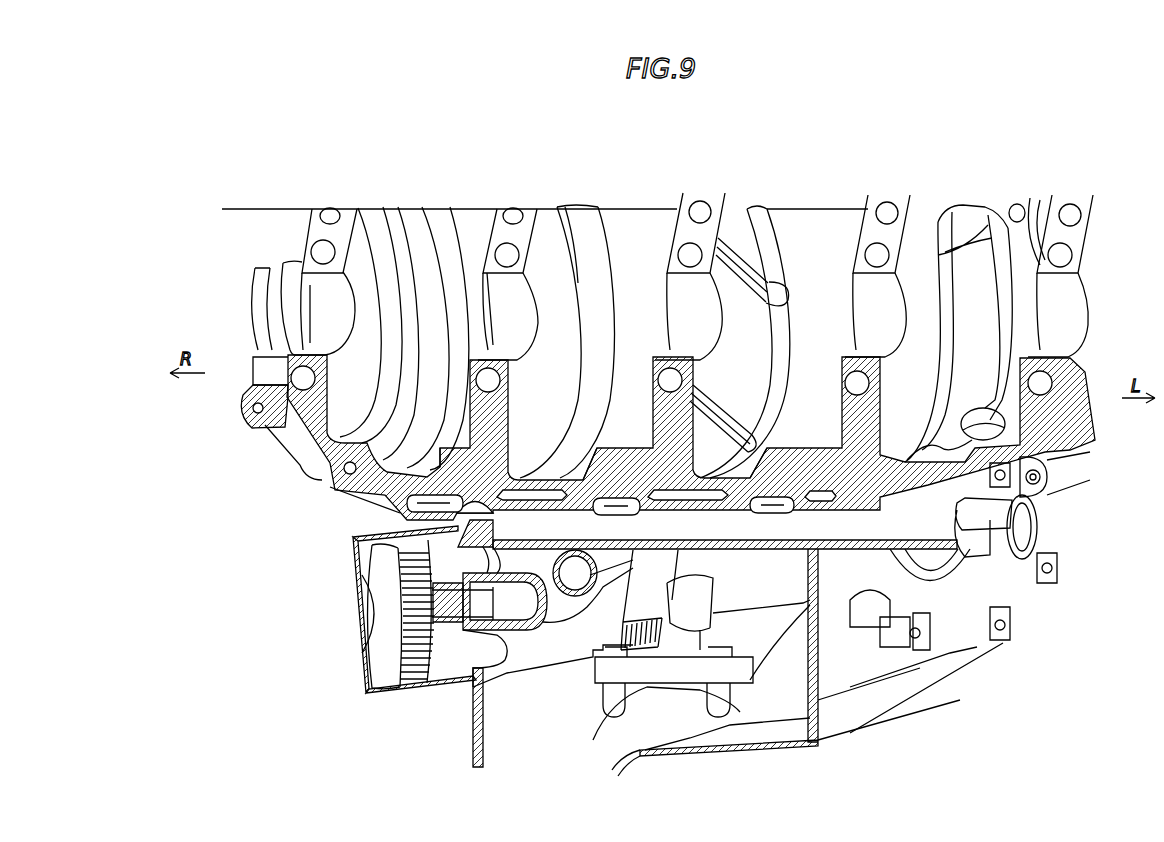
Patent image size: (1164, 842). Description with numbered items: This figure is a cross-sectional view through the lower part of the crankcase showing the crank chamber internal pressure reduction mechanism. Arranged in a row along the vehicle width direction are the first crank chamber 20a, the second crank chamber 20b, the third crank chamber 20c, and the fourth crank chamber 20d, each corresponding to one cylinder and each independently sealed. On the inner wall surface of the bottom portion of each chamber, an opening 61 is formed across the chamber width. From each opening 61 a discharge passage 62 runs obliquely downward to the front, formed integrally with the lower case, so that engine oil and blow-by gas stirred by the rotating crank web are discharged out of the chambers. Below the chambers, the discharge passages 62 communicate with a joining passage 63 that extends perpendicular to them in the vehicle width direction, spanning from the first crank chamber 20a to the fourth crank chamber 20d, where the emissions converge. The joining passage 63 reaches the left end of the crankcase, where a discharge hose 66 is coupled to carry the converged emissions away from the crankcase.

The first crank chamber 20a is at (975, 308).
The second crank chamber 20b is at (830, 308).
The third crank chamber 20c is at (635, 308).
The fourth crank chamber 20d is at (436, 308).
The opening 61 is at (452, 458).
The discharge passage 62 is at (432, 506).
The joining passage 63 is at (838, 525).
The discharge hose 66 is at (1015, 528).